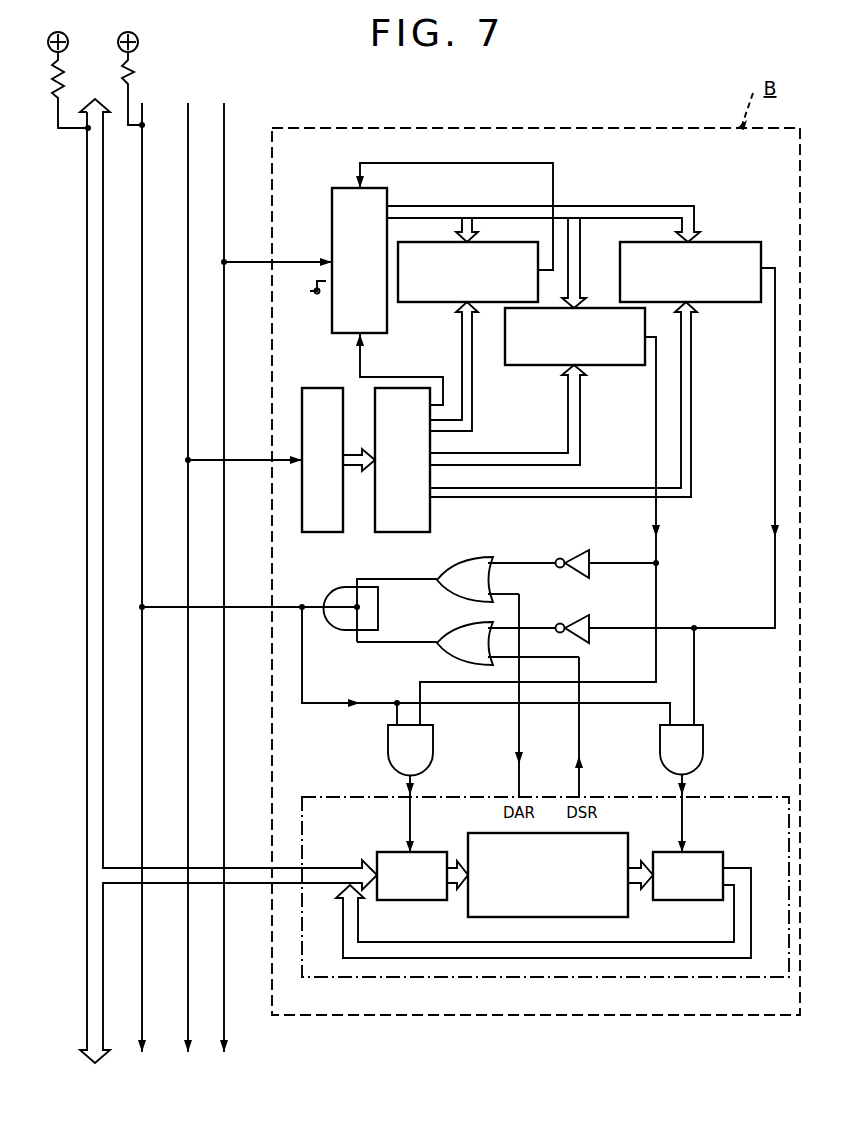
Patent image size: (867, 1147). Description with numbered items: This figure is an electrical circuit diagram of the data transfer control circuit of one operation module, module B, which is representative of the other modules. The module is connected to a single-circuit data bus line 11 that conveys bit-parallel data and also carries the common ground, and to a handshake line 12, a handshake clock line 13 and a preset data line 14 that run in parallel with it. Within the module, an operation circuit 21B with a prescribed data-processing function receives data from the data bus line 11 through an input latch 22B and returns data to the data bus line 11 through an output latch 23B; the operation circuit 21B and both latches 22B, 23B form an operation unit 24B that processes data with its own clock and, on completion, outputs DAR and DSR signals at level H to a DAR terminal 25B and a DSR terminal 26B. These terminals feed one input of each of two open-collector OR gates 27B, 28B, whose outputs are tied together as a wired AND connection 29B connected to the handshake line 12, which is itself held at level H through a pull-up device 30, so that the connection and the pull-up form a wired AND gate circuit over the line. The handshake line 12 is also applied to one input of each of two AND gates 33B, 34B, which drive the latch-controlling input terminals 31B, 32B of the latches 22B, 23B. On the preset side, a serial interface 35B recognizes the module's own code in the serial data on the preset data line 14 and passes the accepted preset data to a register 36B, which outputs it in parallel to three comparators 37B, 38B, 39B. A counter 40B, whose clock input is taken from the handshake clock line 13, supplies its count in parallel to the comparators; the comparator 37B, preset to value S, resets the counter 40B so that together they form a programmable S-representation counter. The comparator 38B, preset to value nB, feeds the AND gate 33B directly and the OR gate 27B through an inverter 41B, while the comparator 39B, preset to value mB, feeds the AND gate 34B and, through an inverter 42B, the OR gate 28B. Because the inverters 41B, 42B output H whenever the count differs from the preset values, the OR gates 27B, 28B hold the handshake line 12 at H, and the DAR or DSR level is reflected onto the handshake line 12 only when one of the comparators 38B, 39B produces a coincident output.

The data bus line 11 is at (106, 1045).
The handshake line 12 is at (145, 1035).
The handshake clock line 13 is at (228, 1035).
The preset data line 14 is at (191, 1035).
The pull-up device 30 is at (138, 76).
The operation circuit 21B is at (628, 912).
The input latch 22B is at (392, 852).
The output latch 23B is at (706, 852).
The operation unit 24B is at (752, 797).
The DAR terminal 25B is at (516, 778).
The DSR terminal 26B is at (584, 778).
The OR gate 27B is at (496, 579).
The OR gate 28B is at (508, 643).
The wired AND connection 29B is at (340, 588).
The latch-controlling input terminal 31B is at (405, 814).
The latch-controlling input terminal 32B is at (685, 808).
The AND gate 33B is at (388, 732).
The AND gate 34B is at (703, 735).
The serial interface 35B is at (328, 388).
The register 36B is at (431, 519).
The comparator 37B is at (420, 302).
The comparator 38B is at (608, 366).
The comparator 39B is at (726, 303).
The counter 40B is at (332, 200).
The inverter 41B is at (584, 551).
The inverter 42B is at (585, 616).